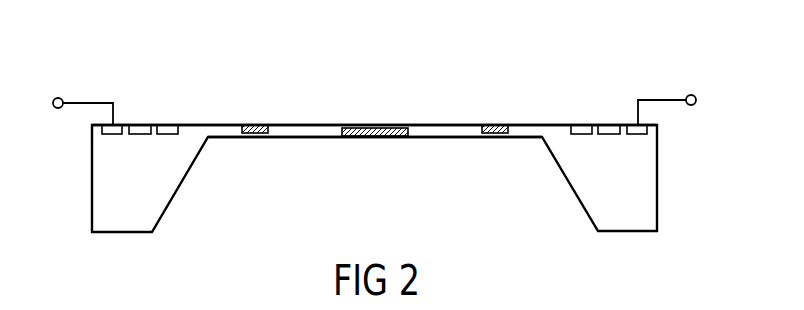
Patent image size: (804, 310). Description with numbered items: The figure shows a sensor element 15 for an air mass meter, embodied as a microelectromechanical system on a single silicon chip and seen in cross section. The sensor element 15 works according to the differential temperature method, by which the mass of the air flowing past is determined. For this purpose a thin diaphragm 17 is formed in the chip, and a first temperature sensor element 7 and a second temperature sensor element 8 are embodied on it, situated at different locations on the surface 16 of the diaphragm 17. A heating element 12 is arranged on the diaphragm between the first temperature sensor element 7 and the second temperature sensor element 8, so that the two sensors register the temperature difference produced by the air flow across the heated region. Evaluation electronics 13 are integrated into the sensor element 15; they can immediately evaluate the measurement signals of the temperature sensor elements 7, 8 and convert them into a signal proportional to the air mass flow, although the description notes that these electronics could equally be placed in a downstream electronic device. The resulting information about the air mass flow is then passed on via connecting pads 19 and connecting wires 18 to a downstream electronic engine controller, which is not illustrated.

The first temperature sensor element 7 is at (495, 125).
The second temperature sensor element 8 is at (260, 125).
The heating element 12 is at (358, 138).
The evaluation electronics 13 is at (140, 126).
The sensor element 15 is at (603, 90).
The surface 16 is at (428, 125).
The diaphragm 17 is at (448, 138).
The connecting wires 18 is at (692, 106).
The connecting pads 19 is at (640, 134).